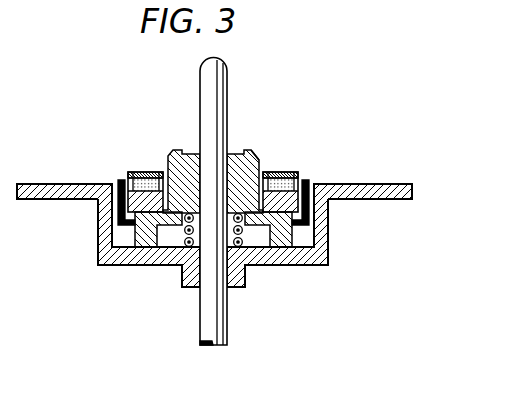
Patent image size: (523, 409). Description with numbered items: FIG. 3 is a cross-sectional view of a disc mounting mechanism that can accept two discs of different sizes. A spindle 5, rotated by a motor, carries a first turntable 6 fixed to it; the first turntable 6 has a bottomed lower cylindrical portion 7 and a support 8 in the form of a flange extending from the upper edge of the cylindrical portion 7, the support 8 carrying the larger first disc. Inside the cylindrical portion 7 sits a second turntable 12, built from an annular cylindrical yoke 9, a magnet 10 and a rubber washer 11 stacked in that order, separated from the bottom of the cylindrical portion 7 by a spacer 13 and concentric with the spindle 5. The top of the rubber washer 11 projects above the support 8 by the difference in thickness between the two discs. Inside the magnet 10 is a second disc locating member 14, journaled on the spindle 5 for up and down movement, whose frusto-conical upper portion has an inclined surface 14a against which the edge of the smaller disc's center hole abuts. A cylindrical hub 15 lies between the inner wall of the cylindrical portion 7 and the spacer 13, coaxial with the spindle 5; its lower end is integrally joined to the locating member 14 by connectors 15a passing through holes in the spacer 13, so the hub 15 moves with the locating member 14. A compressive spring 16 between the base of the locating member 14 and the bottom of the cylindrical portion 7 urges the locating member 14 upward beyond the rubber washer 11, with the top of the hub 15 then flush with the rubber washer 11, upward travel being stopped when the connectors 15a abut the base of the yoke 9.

The spindle 5 is at (229, 78).
The first turntable 6 is at (400, 184).
The bottomed lower cylindrical portion 7 is at (329, 256).
The support 8 is at (372, 201).
The cylindrical yoke 9 is at (142, 173).
The magnet 10 is at (282, 173).
The rubber washer 11 is at (154, 172).
The second turntable 12 is at (294, 173).
The spacer 13 is at (145, 243).
The second disc locating member 14 is at (236, 150).
The inclined surface 14a is at (258, 155).
The cylindrical hub 15 is at (118, 182).
The connectors 15a is at (304, 226).
The compressive spring 16 is at (243, 231).